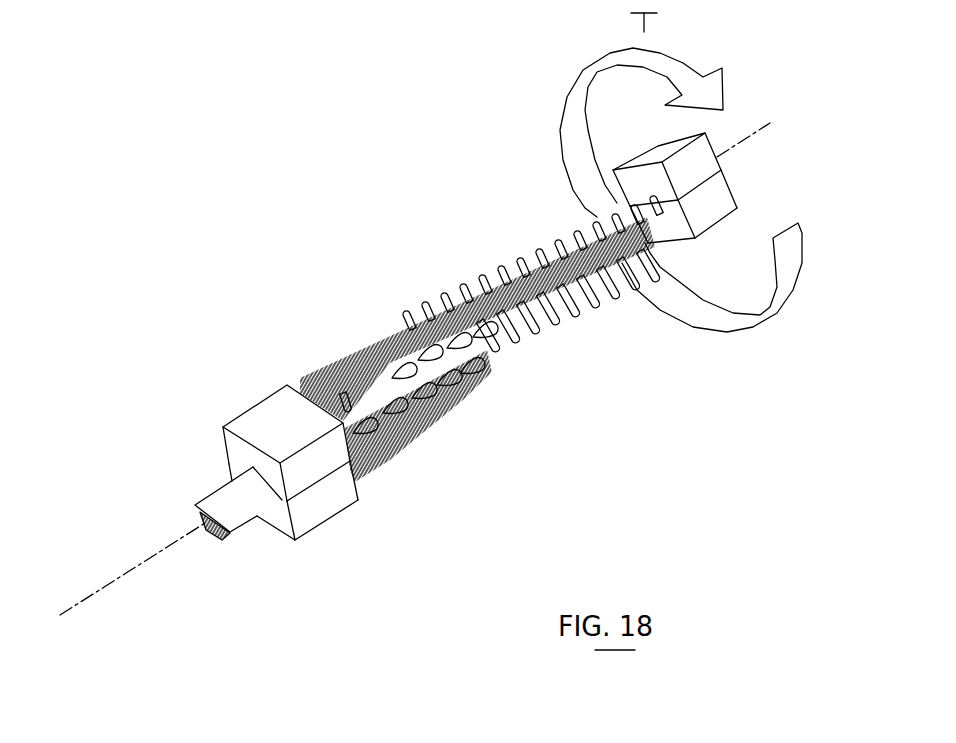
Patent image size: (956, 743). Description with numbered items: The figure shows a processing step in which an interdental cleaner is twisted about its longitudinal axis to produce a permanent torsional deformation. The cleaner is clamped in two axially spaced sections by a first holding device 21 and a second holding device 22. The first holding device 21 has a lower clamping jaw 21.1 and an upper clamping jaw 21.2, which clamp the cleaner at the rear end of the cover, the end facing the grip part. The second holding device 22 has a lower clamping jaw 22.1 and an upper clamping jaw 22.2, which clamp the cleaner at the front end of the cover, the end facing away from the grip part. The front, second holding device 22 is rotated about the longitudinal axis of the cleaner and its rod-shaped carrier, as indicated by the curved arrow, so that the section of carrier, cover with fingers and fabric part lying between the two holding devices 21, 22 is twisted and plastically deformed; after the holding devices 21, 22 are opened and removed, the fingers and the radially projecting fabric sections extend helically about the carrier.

The first holding device 21 is at (200, 355).
The lower clamping jaw 21.1 is at (307, 522).
The upper clamping jaw 21.2 is at (273, 413).
The second holding device 22 is at (752, 176).
The lower clamping jaw 22.1 is at (705, 220).
The upper clamping jaw 22.2 is at (657, 150).